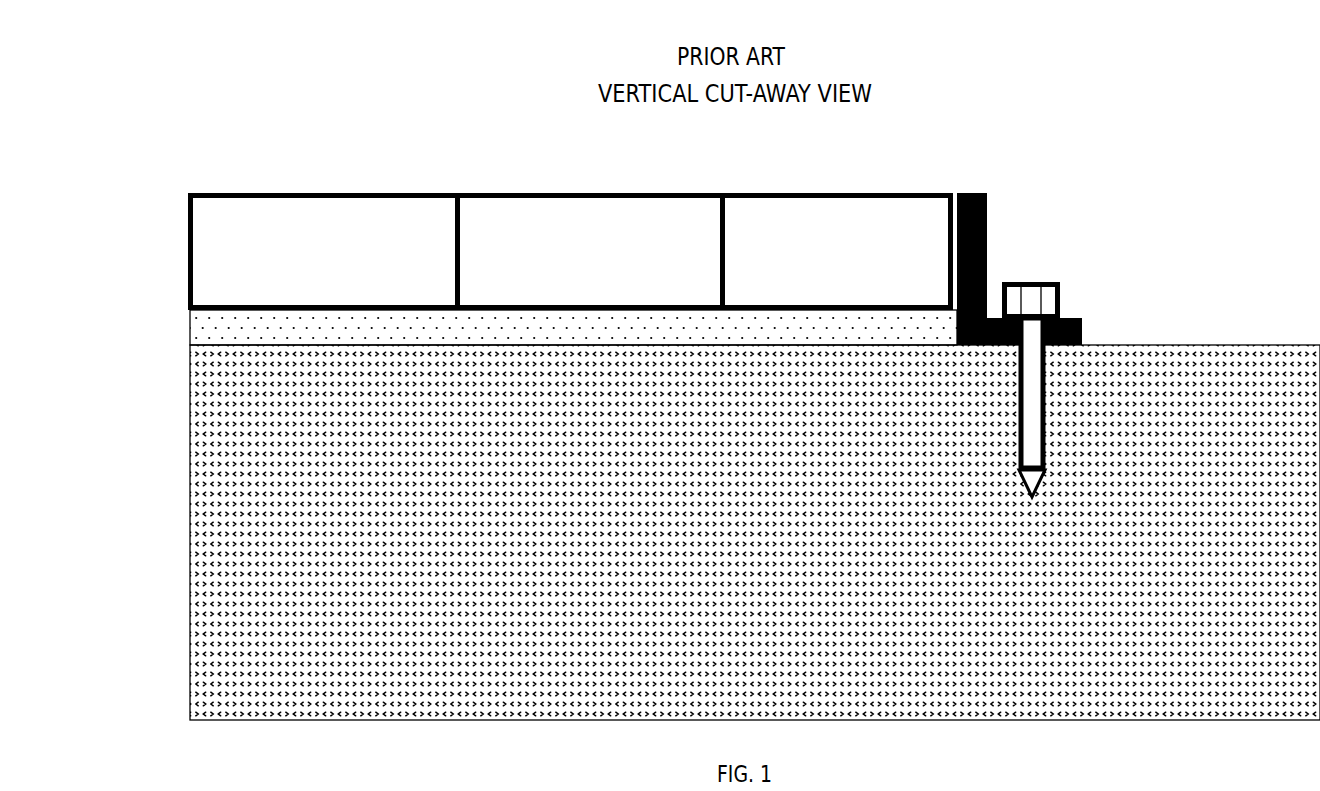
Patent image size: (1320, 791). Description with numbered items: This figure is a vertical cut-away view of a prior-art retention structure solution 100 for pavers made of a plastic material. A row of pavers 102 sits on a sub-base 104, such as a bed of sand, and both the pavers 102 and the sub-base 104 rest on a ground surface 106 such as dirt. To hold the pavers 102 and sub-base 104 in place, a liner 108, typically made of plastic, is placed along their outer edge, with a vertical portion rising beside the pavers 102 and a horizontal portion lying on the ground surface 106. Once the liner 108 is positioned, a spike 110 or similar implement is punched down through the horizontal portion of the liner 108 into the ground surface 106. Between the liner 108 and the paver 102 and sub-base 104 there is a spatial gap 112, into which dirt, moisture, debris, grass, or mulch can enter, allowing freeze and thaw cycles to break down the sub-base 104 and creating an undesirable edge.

The retention structure solution 100 is at (1118, 65).
The pavers 102 is at (406, 218).
The sub-base 104 is at (190, 330).
The ground surface 106 is at (213, 448).
The liner 108 is at (1083, 334).
The spike 110 is at (1062, 298).
The spatial gap 112 is at (965, 190).